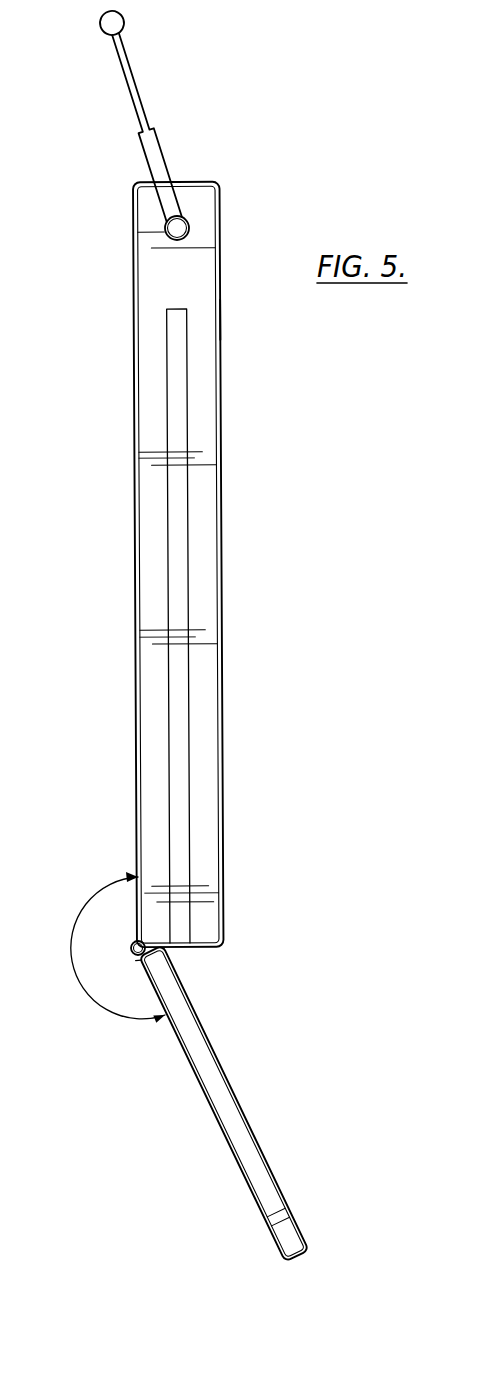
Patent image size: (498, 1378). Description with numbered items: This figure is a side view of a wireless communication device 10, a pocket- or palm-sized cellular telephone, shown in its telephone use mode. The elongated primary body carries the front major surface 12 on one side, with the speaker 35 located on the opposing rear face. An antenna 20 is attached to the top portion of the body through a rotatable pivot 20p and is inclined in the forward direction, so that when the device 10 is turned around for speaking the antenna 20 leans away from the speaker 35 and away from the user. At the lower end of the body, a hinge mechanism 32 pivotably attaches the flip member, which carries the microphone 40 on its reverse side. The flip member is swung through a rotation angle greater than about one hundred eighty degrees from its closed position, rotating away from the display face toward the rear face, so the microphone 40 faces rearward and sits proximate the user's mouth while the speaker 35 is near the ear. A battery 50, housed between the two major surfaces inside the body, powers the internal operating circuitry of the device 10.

The wireless communication device 10 is at (90, 266).
The front major surface 12 is at (137, 573).
The antenna 20 is at (153, 153).
The rotatable pivot 20p is at (178, 229).
The hinge mechanism 32 is at (130, 948).
The speaker 35 is at (220, 322).
The microphone 40 is at (257, 1146).
The battery 50 is at (180, 810).